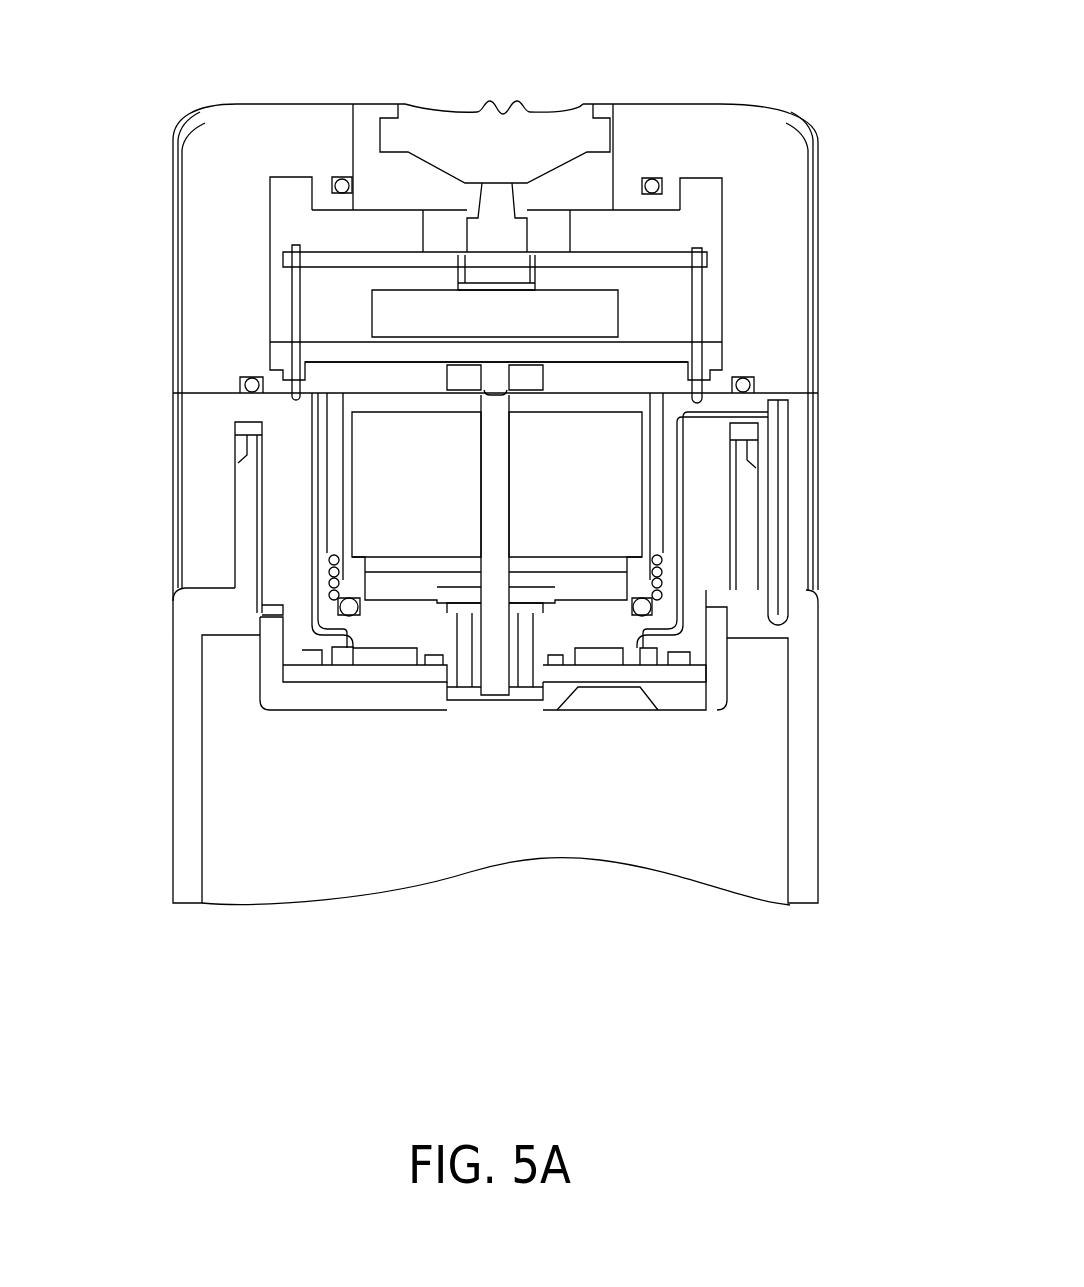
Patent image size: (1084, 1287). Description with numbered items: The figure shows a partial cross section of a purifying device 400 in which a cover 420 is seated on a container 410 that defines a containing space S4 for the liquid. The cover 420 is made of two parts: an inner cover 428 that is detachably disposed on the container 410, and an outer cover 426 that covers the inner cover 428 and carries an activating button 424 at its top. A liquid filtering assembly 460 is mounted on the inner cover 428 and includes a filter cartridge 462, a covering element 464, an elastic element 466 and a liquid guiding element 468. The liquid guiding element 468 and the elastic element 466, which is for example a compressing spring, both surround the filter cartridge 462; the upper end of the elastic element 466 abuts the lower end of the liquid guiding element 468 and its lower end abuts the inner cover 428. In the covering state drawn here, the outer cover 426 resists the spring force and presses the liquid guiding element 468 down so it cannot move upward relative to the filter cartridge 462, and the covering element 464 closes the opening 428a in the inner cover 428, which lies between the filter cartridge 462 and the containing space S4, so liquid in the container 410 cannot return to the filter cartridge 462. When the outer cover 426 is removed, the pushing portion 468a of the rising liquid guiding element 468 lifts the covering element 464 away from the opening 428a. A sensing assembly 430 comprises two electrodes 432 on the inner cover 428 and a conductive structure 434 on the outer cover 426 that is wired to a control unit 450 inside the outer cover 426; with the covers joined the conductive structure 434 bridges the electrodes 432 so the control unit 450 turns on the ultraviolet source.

The purifying device 400 is at (928, 982).
The container 410 is at (186, 800).
The cover 420 is at (98, 355).
The activating button 424 is at (498, 138).
The outer cover 426 is at (198, 373).
The inner cover 428 is at (198, 424).
The opening 428a is at (458, 632).
The sensing assembly 430 is at (878, 0).
The electrodes 432 is at (157, 487).
The conductive structure 434 is at (297, 300).
The control unit 450 is at (667, 262).
The liquid filtering assembly 460 is at (900, 428).
The filter cartridge 462 is at (613, 450).
The covering element 464 is at (555, 600).
The elastic element 466 is at (657, 560).
The liquid guiding element 468 is at (653, 500).
The pushing portion 468a is at (338, 487).
The containing space S4 is at (342, 838).